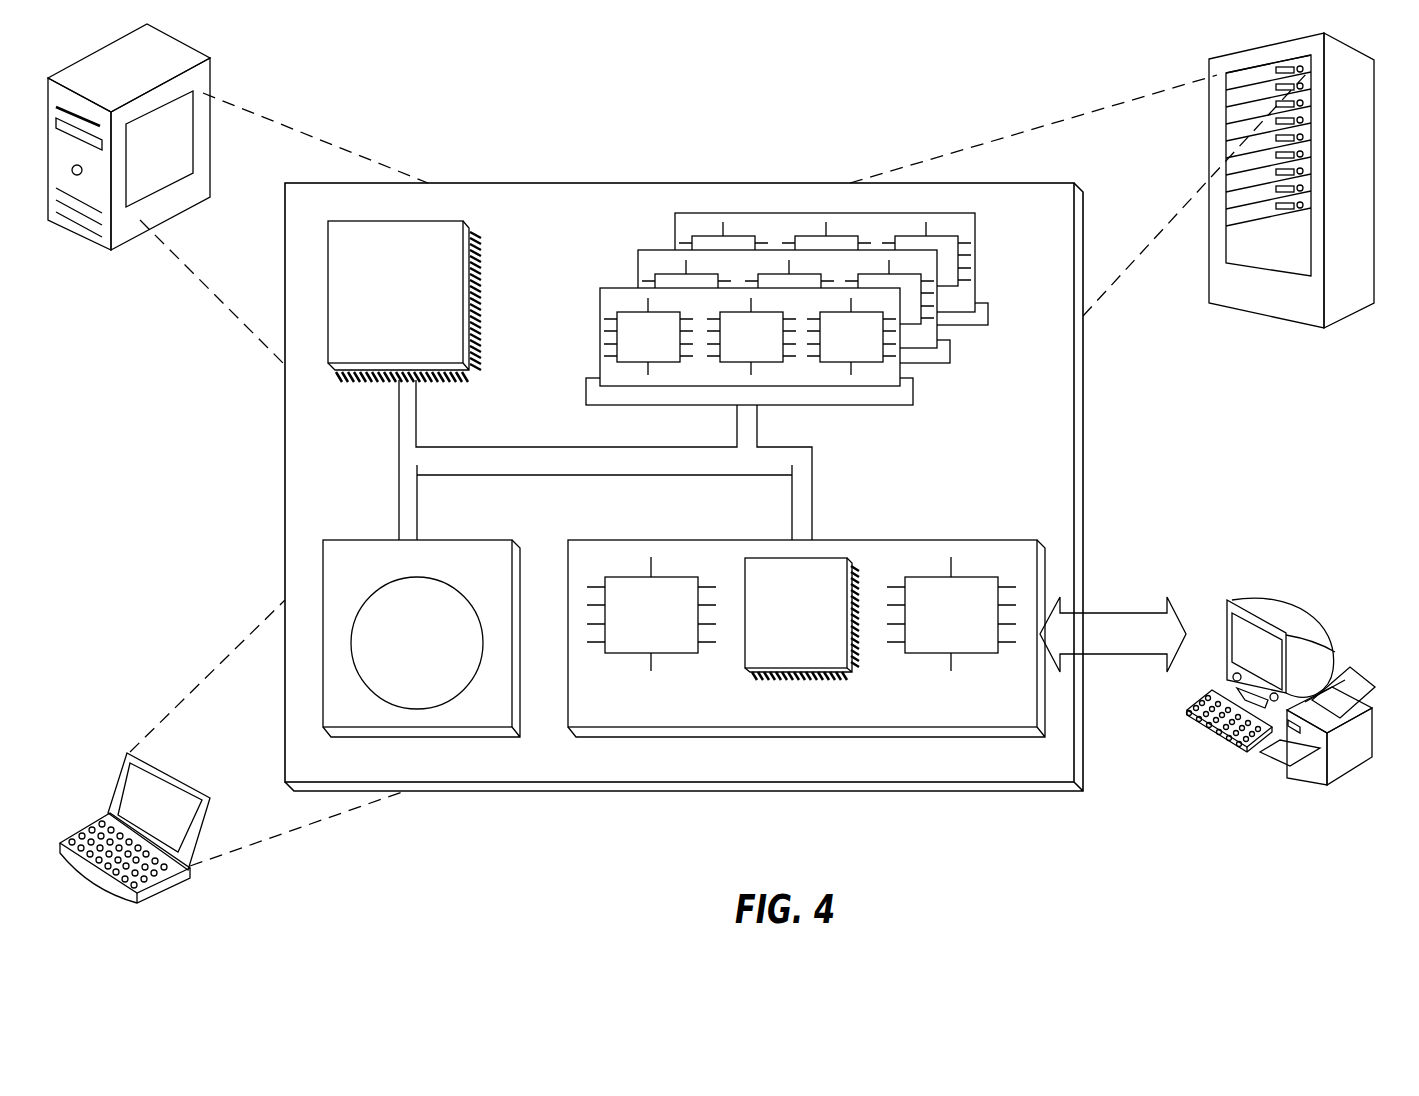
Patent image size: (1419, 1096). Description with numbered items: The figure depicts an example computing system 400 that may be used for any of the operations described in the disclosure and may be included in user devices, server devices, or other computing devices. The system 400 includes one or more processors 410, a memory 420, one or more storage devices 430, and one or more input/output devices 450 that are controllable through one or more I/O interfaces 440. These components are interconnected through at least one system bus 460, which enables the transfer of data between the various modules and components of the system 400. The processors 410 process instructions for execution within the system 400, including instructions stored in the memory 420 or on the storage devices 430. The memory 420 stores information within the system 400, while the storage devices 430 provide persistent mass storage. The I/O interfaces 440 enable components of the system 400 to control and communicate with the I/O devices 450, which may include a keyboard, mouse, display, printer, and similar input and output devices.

The computing system 400 is at (492, 90).
The processor 410 is at (457, 357).
The memory 420 is at (988, 368).
The storage device 430 is at (502, 716).
The I/O interface 440 is at (920, 718).
The I/O device 450 is at (1227, 601).
The system bus 460 is at (600, 465).